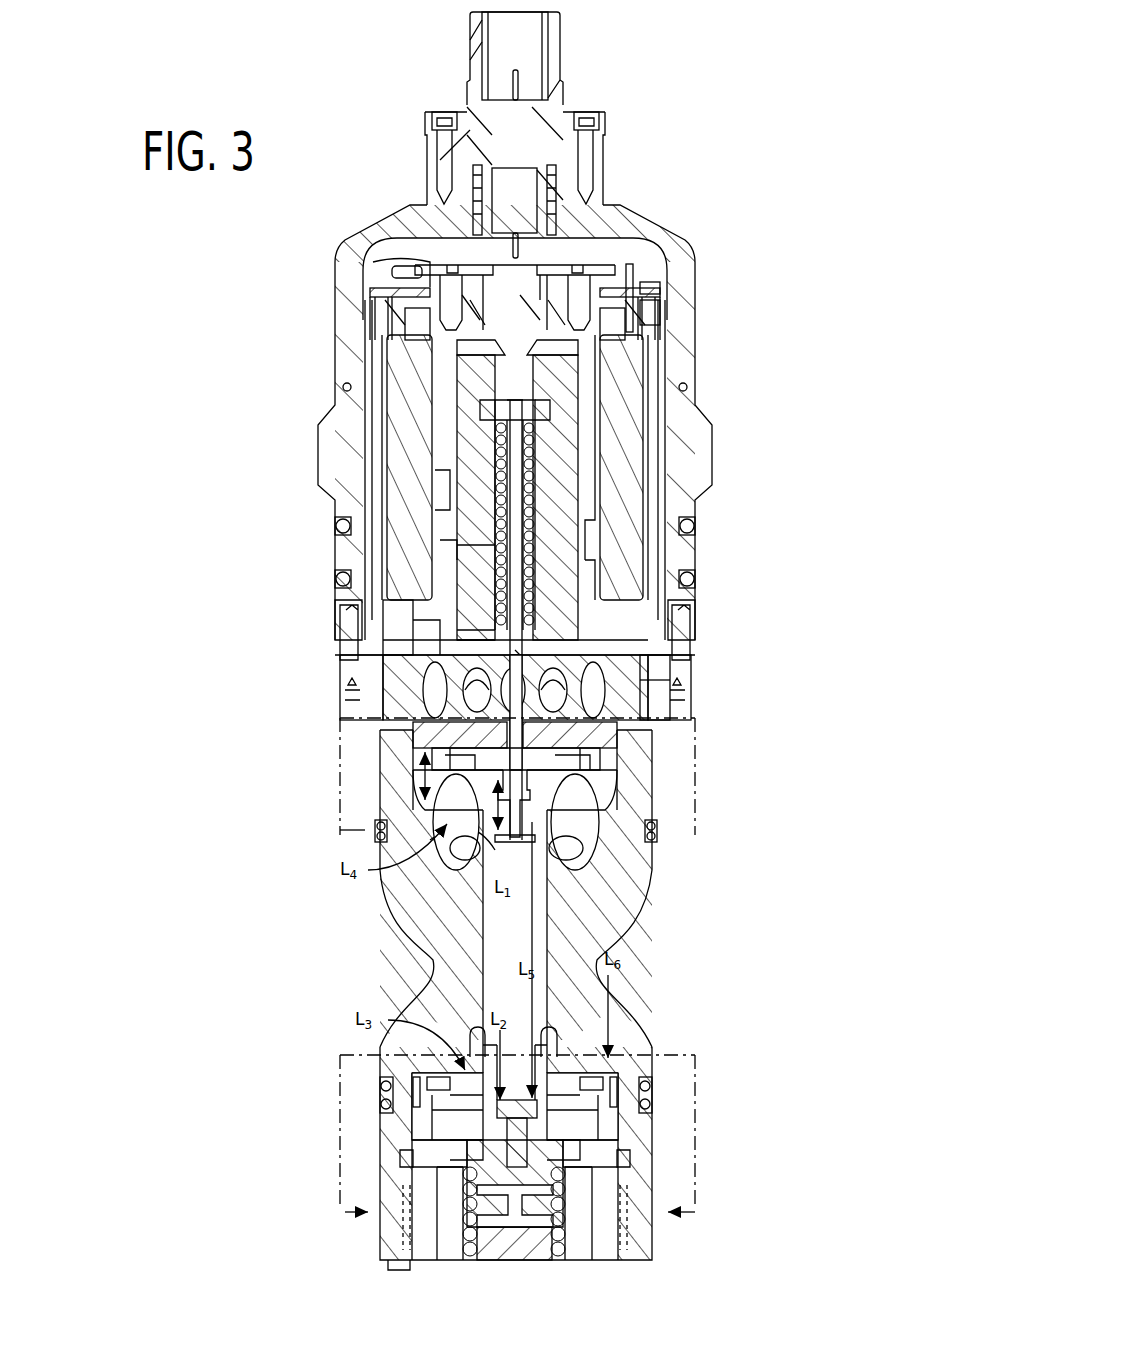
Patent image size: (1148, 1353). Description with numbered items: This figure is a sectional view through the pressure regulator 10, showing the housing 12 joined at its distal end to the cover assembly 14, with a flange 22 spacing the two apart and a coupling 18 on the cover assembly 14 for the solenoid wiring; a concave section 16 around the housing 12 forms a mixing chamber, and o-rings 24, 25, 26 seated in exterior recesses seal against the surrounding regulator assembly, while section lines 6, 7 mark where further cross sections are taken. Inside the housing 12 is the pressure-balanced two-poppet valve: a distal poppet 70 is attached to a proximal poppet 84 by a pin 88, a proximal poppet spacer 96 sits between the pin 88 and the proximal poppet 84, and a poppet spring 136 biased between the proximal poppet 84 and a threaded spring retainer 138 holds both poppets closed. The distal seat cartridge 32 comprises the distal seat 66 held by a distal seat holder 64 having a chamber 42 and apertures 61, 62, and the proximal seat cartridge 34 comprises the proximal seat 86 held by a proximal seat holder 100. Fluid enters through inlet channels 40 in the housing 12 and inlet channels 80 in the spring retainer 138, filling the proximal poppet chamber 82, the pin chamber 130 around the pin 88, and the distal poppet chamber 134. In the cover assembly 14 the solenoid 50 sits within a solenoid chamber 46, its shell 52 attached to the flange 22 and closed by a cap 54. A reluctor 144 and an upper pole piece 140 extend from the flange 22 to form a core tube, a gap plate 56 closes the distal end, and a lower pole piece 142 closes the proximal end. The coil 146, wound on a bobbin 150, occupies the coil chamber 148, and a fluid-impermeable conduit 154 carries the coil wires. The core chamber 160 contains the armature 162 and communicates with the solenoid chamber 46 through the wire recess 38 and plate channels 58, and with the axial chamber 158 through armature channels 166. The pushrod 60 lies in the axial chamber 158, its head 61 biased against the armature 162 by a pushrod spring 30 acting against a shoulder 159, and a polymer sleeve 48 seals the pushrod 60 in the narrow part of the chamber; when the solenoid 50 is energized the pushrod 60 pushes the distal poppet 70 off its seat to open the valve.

The pressure regulator 10 is at (385, 80).
The housing 12 is at (648, 1052).
The cover assembly 14 is at (625, 200).
The concave section 16 is at (370, 970).
The coupling 18 is at (560, 12).
The flange 22 is at (665, 647).
The o-ring 24 is at (336, 527).
The o-ring 25 is at (336, 582).
The o-ring 26 is at (380, 832).
The pushrod spring 30 is at (480, 547).
The distal seat cartridge 32 is at (420, 782).
The proximal seat cartridge 34 is at (455, 1142).
The wire recess 38 is at (540, 270).
The inlet channels 40 is at (390, 706).
The chamber 42 is at (475, 692).
The solenoid chamber 46 is at (403, 262).
The polymer sleeve 48 is at (440, 632).
The solenoid 50 is at (356, 322).
The shell 52 is at (657, 318).
The cap 54 is at (656, 292).
The gap plate 56 is at (395, 275).
The plate channels 58 is at (500, 312).
The pushrod 60 is at (580, 706).
The apertures 61 is at (530, 402).
The apertures 62 is at (580, 822).
The distal seat holder 64 is at (420, 737).
The distal seat 66 is at (575, 772).
The distal poppet 70 is at (540, 832).
The inlet channels 80 is at (575, 1258).
The proximal poppet chamber 82 is at (577, 1147).
The proximal poppet 84 is at (545, 1192).
The proximal seat 86 is at (500, 1137).
The pin 88 is at (483, 987).
The proximal poppet spacer 96 is at (540, 1113).
The proximal seat holder 100 is at (425, 1087).
The pin chamber 130 is at (548, 1048).
The distal poppet chamber 134 is at (470, 567).
The poppet spring 136 is at (465, 1212).
The spring retainer 138 is at (390, 1272).
The upper pole piece 140 is at (420, 285).
The lower pole piece 142 is at (560, 577).
The reluctor 144 is at (590, 530).
The solenoid coil 146 is at (630, 452).
The coil chamber 148 is at (372, 331).
The bobbin 150 is at (605, 428).
The fluid-impermeable conduit 154 is at (634, 278).
The axial chamber 158 is at (490, 472).
The shoulder 159 is at (656, 662).
The core chamber 160 is at (560, 352).
The armature 162 is at (465, 397).
The armature channels 166 is at (537, 412).
The section line 6 is at (364, 832).
The section line 7 is at (519, 1212).